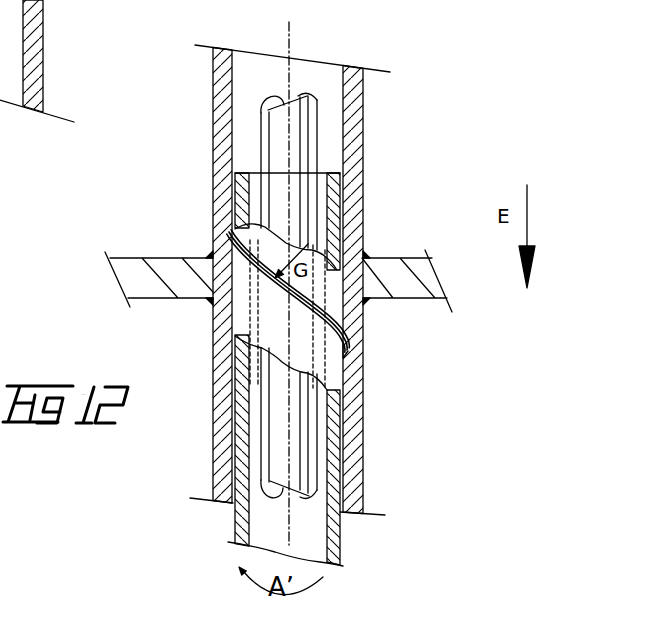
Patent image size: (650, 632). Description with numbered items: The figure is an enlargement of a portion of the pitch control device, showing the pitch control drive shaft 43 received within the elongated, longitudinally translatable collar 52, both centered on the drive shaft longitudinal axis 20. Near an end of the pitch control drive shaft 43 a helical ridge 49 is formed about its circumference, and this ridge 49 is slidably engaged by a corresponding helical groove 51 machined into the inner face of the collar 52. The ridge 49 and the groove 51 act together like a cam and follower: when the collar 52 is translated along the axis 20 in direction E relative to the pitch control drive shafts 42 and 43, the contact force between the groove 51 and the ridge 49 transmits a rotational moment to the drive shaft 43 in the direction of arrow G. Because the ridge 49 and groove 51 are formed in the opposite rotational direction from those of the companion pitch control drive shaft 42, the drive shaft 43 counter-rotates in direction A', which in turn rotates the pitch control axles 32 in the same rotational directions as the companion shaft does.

The drive shaft longitudinal axis 20 is at (290, 43).
The pitch control axle 32 is at (59, 61).
The pitch control drive shaft 42 is at (333, 218).
The pitch control drive shaft 43 is at (307, 95).
The helical ridge 49 is at (276, 291).
The helical groove 51 is at (344, 352).
The collar 52 is at (359, 116).